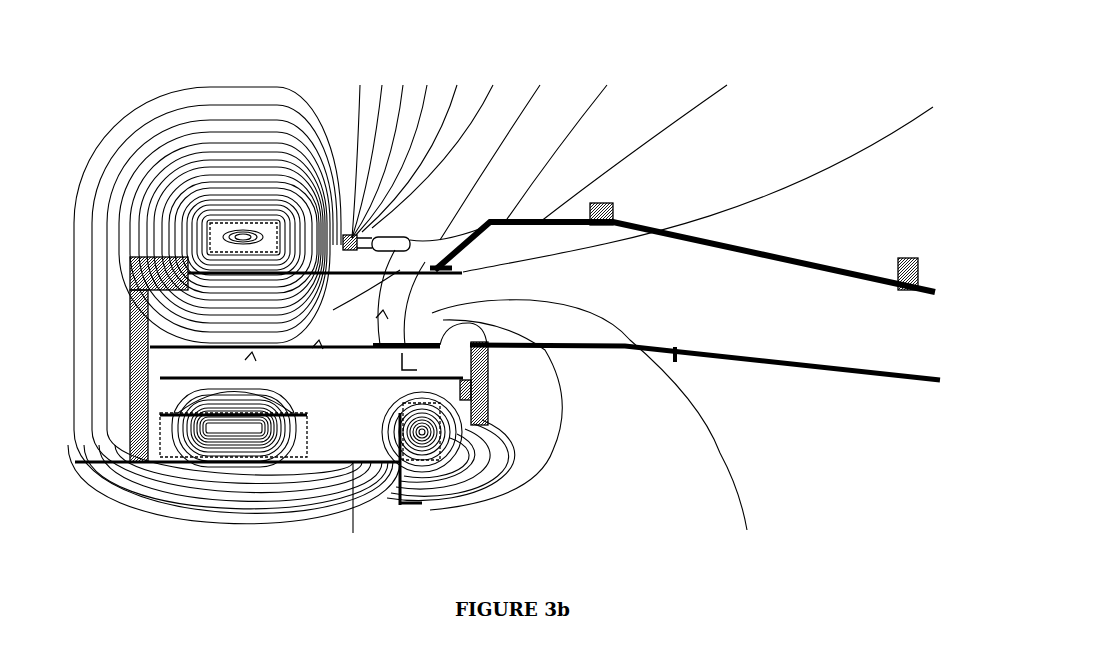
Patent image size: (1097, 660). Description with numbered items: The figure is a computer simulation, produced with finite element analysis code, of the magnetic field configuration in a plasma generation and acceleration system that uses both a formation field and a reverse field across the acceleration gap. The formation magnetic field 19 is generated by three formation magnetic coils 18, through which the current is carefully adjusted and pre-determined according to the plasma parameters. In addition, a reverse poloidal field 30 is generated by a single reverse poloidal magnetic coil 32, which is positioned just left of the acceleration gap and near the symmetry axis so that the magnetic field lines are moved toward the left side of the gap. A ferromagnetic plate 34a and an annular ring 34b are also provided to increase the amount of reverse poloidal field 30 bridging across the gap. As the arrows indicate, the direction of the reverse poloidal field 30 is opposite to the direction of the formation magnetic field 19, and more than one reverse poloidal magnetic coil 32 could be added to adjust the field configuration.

The formation magnetic coil 18 is at (193, 452).
The formation magnetic field 19 is at (270, 325).
The reverse poloidal field 30 is at (497, 323).
The reverse poloidal magnetic coil 32 is at (440, 450).
The ferromagnetic plate 34a is at (490, 393).
The annular ring 34b is at (422, 342).